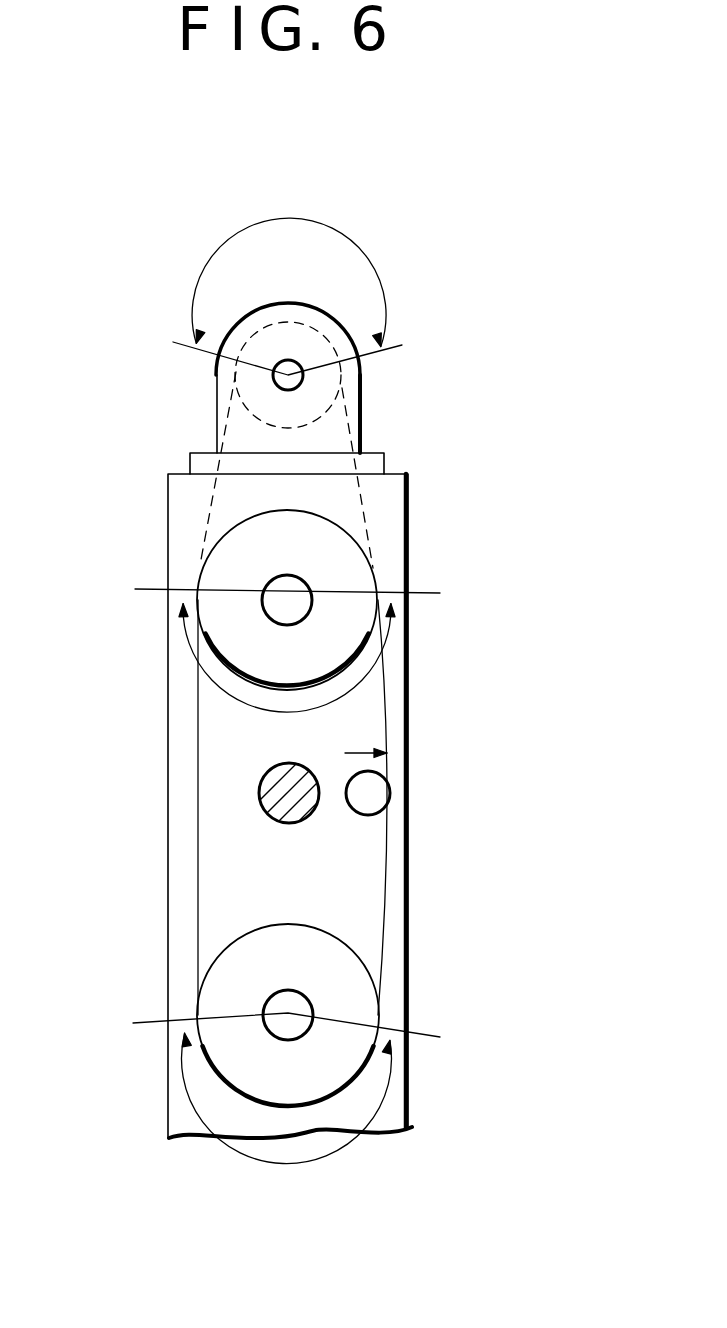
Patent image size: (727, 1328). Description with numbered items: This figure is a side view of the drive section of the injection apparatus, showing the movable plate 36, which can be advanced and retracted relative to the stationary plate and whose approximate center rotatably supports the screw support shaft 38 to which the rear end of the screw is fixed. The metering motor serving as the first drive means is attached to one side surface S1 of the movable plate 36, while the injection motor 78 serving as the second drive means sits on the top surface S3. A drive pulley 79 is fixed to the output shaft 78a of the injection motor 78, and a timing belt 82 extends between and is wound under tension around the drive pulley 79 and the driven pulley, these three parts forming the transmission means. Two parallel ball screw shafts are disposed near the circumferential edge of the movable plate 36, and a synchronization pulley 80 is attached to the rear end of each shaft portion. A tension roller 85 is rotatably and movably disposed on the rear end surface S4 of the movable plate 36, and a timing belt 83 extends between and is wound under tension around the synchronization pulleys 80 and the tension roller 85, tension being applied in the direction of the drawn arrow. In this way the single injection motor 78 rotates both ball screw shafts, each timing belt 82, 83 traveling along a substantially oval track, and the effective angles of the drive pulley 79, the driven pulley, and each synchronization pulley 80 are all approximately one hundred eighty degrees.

The movable plate 36 is at (412, 556).
The injection motor 78 is at (242, 318).
The output shaft 78a is at (293, 360).
The drive pulley 79 is at (288, 330).
The timing belt 82 is at (347, 410).
The synchronization pulley 80 is at (340, 538).
The timing belt 83 is at (390, 670).
The tension roller 85 is at (383, 794).
The screw support shaft 38 is at (258, 798).
The side surface S1 is at (167, 637).
The top surface S3 is at (173, 473).
The rear end surface S4 is at (402, 1075).